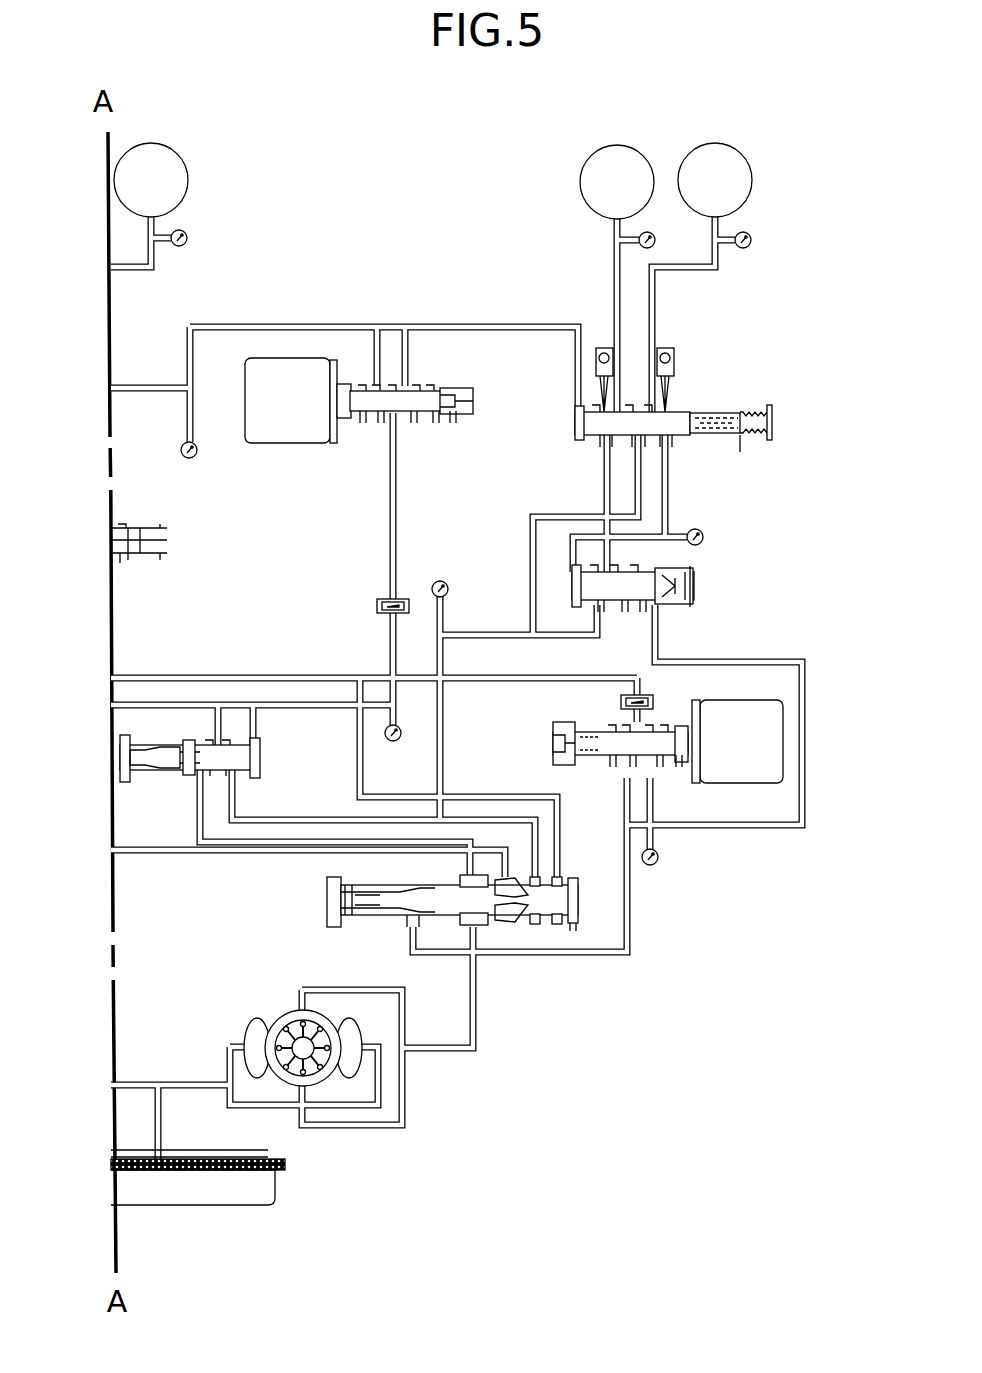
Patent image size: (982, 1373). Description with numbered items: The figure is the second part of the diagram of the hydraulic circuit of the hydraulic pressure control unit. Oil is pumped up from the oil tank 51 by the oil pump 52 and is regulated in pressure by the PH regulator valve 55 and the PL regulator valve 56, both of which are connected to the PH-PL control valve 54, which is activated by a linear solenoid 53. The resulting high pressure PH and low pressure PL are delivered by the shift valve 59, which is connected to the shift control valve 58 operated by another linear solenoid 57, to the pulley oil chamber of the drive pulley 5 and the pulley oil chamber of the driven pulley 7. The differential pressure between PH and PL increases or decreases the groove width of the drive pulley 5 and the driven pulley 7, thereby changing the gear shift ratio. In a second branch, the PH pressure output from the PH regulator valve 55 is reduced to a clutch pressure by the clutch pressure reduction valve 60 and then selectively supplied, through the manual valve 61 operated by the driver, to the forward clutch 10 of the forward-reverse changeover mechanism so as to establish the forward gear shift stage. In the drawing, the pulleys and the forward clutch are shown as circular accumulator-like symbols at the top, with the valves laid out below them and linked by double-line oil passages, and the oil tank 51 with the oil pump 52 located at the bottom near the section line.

The drive pulley 5 is at (752, 190).
The driven pulley 7 is at (580, 182).
The forward clutch 10 is at (188, 188).
The oil tank 51 is at (268, 1150).
The oil pump 52 is at (270, 1008).
The linear solenoid 53 is at (740, 773).
The PH-PL control valve 54 is at (610, 780).
The PH regulator valve 55 is at (318, 902).
The PL regulator valve 56 is at (703, 586).
The linear solenoid 57 is at (285, 432).
The shift control valve 58 is at (460, 372).
The shift valve 59 is at (725, 393).
The clutch pressure reduction valve 60 is at (255, 783).
The manual valve 61 is at (150, 563).